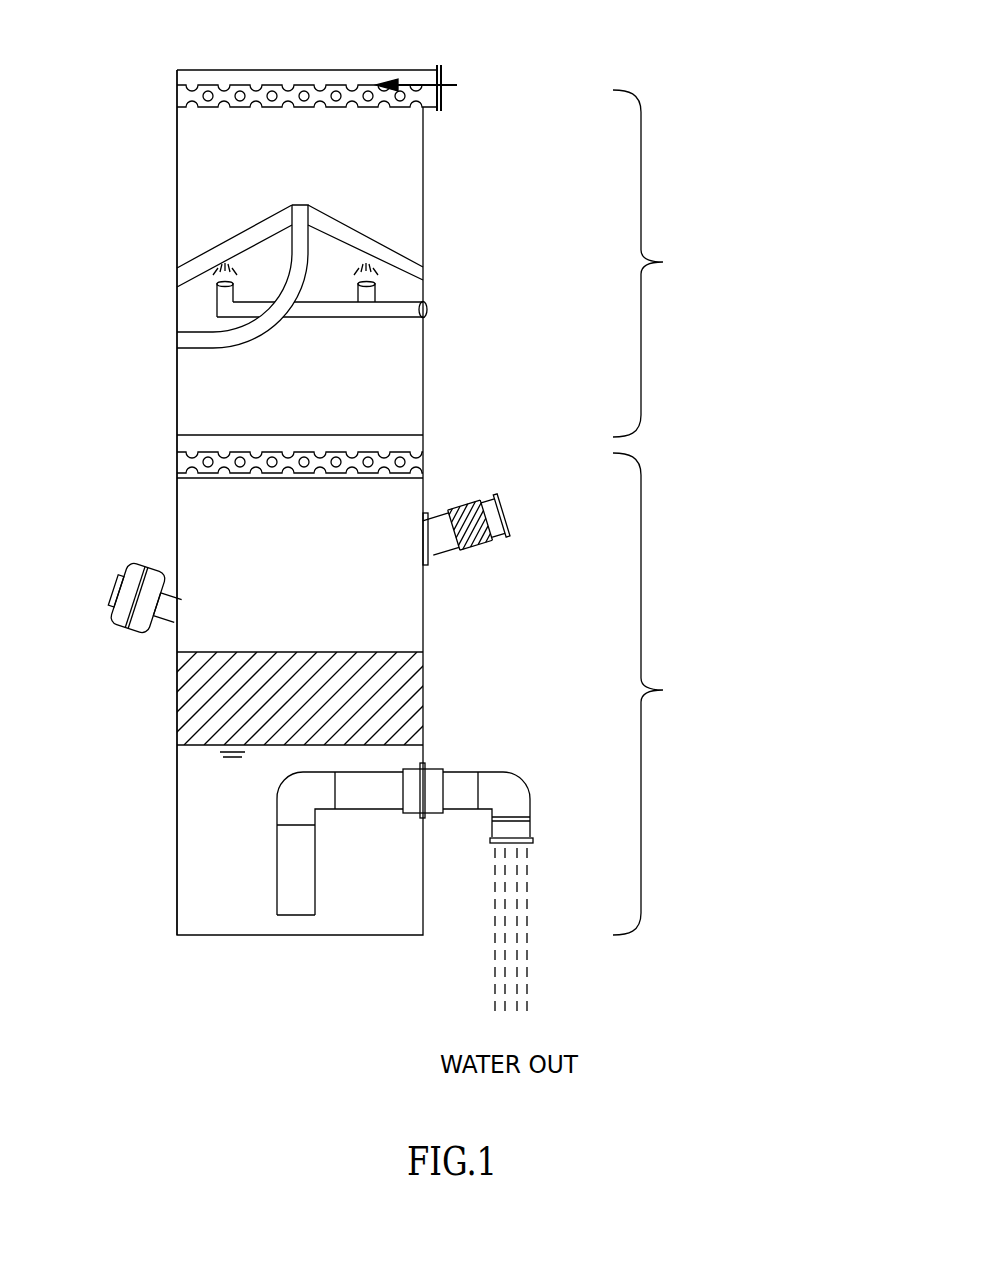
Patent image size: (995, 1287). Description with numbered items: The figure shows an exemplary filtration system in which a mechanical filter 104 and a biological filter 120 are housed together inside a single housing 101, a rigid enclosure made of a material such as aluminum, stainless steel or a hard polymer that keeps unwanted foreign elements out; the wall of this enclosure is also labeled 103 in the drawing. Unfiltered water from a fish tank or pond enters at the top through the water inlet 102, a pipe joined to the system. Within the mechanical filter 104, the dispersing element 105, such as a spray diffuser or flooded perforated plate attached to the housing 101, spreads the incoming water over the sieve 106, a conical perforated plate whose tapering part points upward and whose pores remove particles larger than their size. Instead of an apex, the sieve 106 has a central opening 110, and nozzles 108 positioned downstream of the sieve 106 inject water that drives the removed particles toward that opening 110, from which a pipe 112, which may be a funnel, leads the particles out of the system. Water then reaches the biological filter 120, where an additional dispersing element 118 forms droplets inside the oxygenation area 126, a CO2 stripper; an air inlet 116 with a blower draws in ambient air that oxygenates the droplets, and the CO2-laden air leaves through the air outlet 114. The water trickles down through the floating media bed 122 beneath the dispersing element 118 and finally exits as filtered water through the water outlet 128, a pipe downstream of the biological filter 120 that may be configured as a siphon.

The housing 101 is at (425, 165).
The water inlet 102 is at (447, 87).
The tank wall 103 is at (177, 165).
The mechanical filter 104 is at (762, 218).
The dispersing element 105 is at (202, 107).
The sieve 106 is at (240, 231).
The nozzles 108 is at (215, 292).
The opening 110 is at (305, 205).
The pipe 112 is at (210, 349).
The air outlet 114 is at (490, 510).
The air inlet 116 is at (118, 538).
The dispersing element 118 is at (182, 463).
The biological filter 120 is at (762, 635).
The floating media bed 122 is at (192, 682).
The oxygenation area 126 is at (318, 587).
The water outlet 128 is at (525, 785).